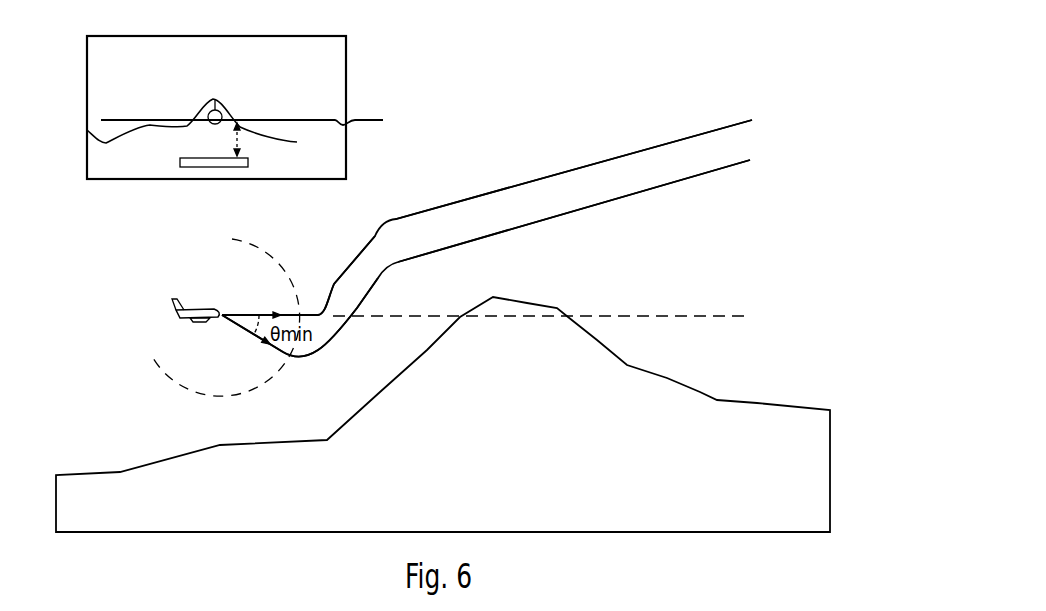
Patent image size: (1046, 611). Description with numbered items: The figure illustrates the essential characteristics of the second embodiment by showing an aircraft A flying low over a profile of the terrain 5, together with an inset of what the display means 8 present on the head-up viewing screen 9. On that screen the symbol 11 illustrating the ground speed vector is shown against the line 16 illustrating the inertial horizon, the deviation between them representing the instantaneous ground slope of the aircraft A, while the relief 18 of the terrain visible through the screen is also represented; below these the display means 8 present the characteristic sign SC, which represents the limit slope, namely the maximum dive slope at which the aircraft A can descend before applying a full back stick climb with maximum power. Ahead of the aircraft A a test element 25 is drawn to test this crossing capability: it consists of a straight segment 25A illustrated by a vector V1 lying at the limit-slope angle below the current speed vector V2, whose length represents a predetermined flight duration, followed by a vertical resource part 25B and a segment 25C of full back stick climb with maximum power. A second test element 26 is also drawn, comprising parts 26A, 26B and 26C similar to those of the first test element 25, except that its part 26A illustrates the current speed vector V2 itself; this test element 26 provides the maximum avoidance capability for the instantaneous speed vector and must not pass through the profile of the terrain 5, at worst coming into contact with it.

The terrain 5 is at (703, 388).
The display means 8 is at (121, 190).
The viewing screen 9 is at (346, 62).
The symbol illustrating the ground speed vector 11 is at (221, 113).
The line illustrating the inertial horizon 16 is at (255, 120).
The relief of the terrain 18 is at (87, 130).
The test element 25 is at (770, 161).
The straight segment 25A is at (253, 346).
The vertical resource part 25B is at (372, 300).
The segment of full back stick climb with maximum power 25C is at (698, 186).
The test element 26 is at (768, 113).
The part illustrating the current speed vector 26A is at (240, 291).
The vertical resource part 26B is at (342, 260).
The segment of full back stick climb with maximum power 26C is at (598, 152).
The aircraft A is at (193, 300).
The characteristic sign SC is at (213, 167).
The vector V1 is at (250, 330).
The current speed vector V2 is at (247, 313).